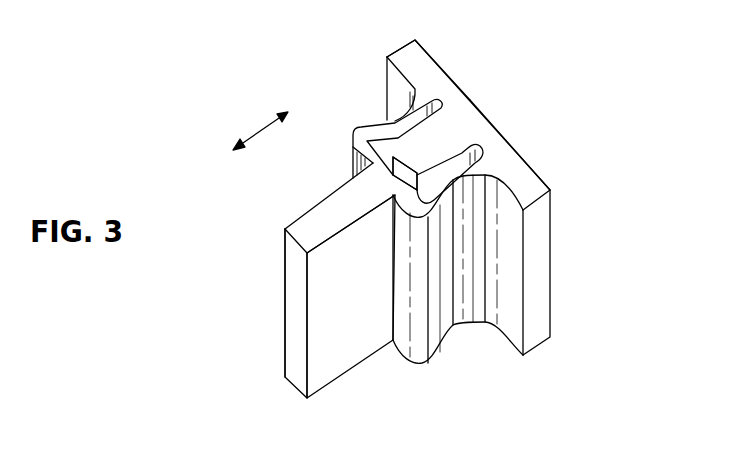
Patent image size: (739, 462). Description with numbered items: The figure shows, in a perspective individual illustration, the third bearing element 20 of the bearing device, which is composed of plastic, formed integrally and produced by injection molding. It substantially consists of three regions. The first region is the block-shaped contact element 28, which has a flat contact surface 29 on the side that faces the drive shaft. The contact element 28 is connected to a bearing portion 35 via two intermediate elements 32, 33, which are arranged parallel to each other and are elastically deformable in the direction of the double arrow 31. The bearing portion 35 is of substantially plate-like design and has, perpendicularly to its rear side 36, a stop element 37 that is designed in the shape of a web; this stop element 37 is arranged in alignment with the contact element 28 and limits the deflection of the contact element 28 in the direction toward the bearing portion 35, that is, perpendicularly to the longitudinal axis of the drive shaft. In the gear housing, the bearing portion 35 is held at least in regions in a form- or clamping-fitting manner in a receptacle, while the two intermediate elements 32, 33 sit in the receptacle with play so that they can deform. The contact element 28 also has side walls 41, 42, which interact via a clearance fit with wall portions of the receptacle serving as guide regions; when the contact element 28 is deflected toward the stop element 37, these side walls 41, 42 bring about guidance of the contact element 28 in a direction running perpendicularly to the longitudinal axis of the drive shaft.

The third bearing element 20 is at (600, 237).
The contact element 28 is at (330, 215).
The contact surface 29 is at (297, 307).
The double arrow 31 is at (262, 130).
The intermediate element 32 is at (398, 125).
The intermediate element 33 is at (454, 178).
The bearing portion 35 is at (425, 69).
The rear side 36 is at (517, 149).
The stop element 37 is at (420, 153).
The side wall 41 is at (284, 277).
The side wall 42 is at (340, 330).